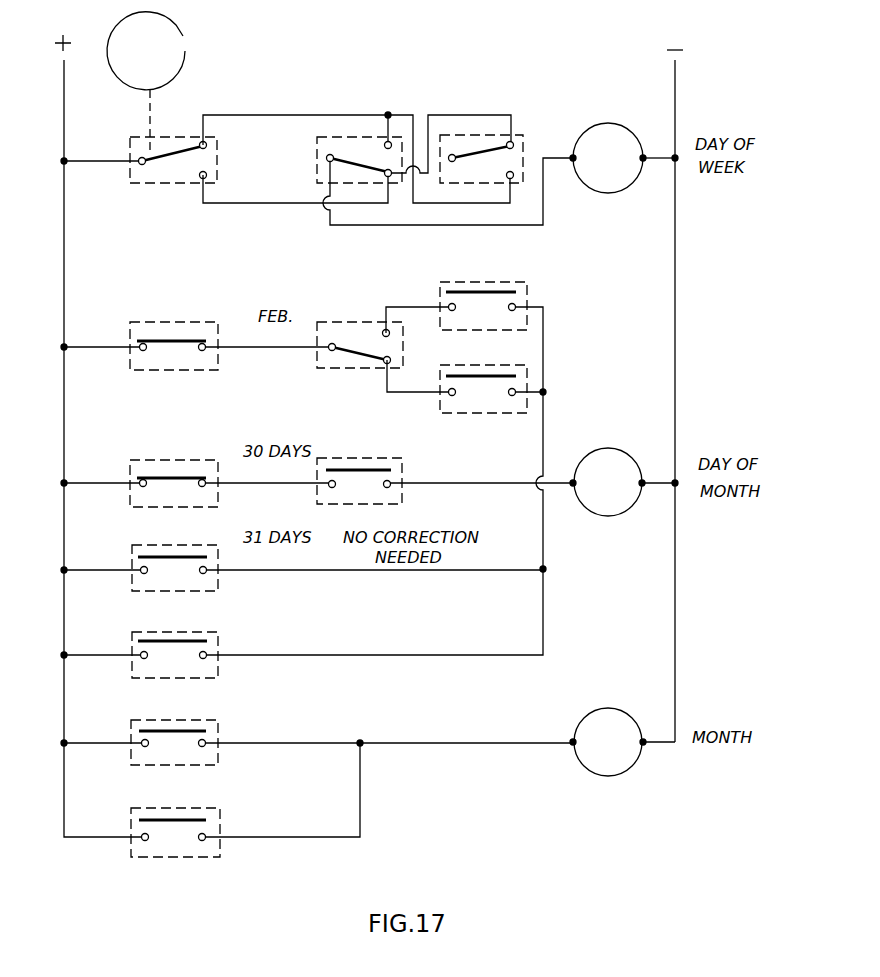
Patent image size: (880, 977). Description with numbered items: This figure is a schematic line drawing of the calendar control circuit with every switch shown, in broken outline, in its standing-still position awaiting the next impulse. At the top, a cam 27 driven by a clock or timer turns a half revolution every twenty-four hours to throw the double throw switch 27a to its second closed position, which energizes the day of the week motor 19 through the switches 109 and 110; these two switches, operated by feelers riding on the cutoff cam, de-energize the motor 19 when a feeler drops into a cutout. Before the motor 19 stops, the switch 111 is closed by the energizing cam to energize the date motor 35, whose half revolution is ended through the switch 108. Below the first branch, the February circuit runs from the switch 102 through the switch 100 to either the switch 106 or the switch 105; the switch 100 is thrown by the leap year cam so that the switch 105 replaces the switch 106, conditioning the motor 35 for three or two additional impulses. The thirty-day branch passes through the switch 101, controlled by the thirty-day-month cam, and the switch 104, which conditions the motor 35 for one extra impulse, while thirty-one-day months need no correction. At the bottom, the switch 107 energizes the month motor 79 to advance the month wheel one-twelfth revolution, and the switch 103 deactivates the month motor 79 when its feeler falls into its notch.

The cam 27 is at (185, 47).
The double throw switch 27a is at (168, 174).
The switch 109 is at (317, 153).
The switch 110 is at (524, 133).
The day of the week motor 19 is at (612, 189).
The switch 102 is at (165, 320).
The switch 100 is at (352, 322).
The switch 106 is at (470, 282).
The switch 105 is at (470, 365).
The switch 101 is at (165, 460).
The switch 104 is at (363, 458).
The date motor 35 is at (610, 514).
The switch 108 is at (166, 545).
The switch 111 is at (165, 632).
The switch 107 is at (165, 720).
The month motor 79 is at (610, 775).
The switch 103 is at (165, 808).